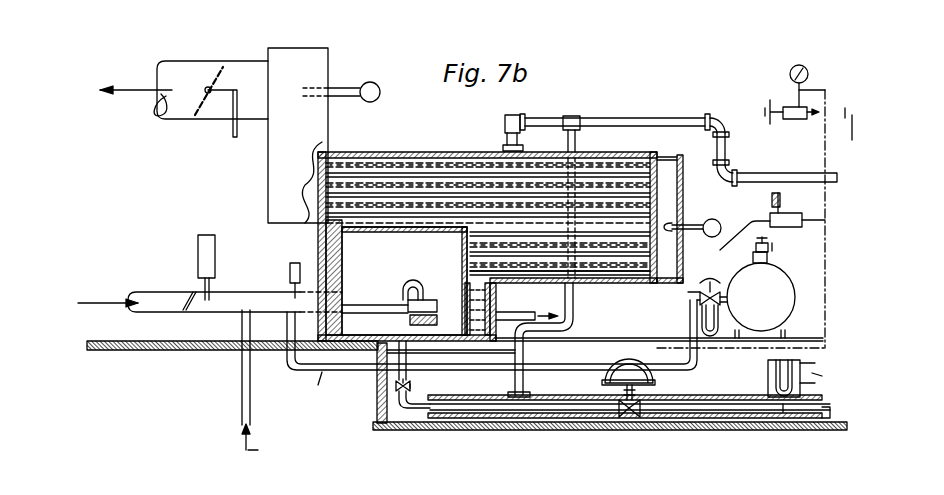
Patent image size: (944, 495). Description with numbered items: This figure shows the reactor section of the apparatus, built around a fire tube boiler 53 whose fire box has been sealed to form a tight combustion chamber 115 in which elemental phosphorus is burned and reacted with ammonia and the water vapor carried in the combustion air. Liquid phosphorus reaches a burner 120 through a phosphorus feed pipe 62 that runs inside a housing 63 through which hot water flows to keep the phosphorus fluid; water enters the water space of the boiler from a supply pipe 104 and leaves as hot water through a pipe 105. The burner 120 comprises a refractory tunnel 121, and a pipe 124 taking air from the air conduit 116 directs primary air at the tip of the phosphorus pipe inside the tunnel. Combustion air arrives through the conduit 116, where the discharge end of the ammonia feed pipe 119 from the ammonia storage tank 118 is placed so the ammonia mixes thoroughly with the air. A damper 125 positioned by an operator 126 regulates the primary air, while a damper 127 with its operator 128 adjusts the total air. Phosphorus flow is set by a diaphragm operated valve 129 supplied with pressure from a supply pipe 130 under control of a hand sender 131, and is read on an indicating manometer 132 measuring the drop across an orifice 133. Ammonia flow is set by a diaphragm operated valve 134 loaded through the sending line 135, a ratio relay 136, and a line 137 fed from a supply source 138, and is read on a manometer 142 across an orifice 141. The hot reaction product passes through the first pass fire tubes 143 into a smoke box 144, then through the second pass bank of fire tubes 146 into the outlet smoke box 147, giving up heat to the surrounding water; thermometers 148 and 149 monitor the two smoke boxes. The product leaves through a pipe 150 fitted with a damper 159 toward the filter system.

The fire tube boiler 53 is at (487, 229).
The phosphorus feed pipe 62 is at (668, 412).
The housing 63 is at (725, 401).
The supply pipe 104 is at (527, 311).
The hot water discharge pipe 105 is at (669, 110).
The combustion chamber 115 is at (402, 252).
The air conduit 116 is at (158, 298).
The ammonia storage tank 118 is at (772, 305).
The ammonia feed pipe 119 is at (298, 374).
The burner 120 is at (430, 298).
The tunnel 121 is at (436, 318).
The primary air pipe 124 is at (405, 294).
The damper 125 is at (380, 303).
The damper operator 126 is at (288, 272).
The damper 127 is at (188, 312).
The damper operator 128 is at (218, 266).
The diaphragm operated valve 129 is at (612, 368).
The supply pipe 130 is at (845, 113).
The hand sender 131 is at (783, 120).
The indicating manometer 132 is at (768, 381).
The orifice 133 is at (783, 408).
The diaphragm operated valve 134 is at (700, 281).
The sending line 135 is at (825, 255).
The ratio relay 136 is at (780, 228).
The line 137 is at (747, 224).
The supply source 138 is at (781, 200).
The orifice 141 is at (688, 330).
The manometer 142 is at (722, 332).
The fire tubes 143 is at (622, 270).
The smoke box 144 is at (668, 203).
The fire tubes 146 is at (383, 168).
The outlet smoke box 147 is at (268, 172).
The thermometer 148 is at (709, 219).
The thermometer 149 is at (373, 82).
The pipe 150 is at (170, 117).
The damper 159 is at (207, 68).